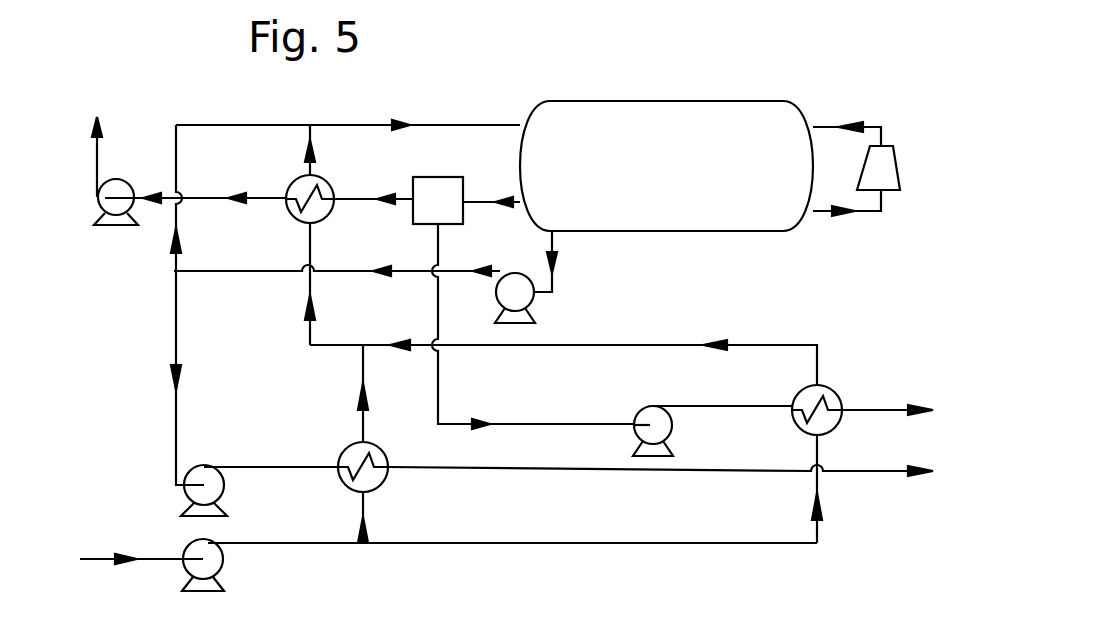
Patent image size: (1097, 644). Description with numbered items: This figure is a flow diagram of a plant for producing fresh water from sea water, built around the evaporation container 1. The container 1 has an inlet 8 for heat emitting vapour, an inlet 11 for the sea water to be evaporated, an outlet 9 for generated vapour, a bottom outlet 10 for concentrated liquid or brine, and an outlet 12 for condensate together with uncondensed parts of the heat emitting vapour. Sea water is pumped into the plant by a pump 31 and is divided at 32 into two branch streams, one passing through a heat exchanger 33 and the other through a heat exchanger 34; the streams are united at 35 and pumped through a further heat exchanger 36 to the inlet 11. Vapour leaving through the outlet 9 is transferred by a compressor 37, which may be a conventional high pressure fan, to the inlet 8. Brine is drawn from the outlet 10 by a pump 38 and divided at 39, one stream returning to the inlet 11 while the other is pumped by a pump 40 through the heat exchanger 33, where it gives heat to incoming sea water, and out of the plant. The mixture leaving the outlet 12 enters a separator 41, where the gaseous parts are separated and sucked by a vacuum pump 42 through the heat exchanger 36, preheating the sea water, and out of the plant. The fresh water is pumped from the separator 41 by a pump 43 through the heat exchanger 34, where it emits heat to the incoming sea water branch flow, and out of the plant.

The container 1 is at (620, 130).
The inlet for heat emitting vapour 8 is at (822, 125).
The outlet for generated vapour 9 is at (820, 212).
The outlet for concentrated liquid 10 is at (555, 238).
The inlet for liquid to be evaporated 11 is at (503, 127).
The outlet for condensate 12 is at (470, 203).
The pump 31 is at (218, 575).
The division point 32 is at (365, 545).
The heat exchanger 33 is at (350, 455).
The heat exchanger 34 is at (820, 385).
The union point 35 is at (365, 345).
The heat exchanger 36 is at (306, 181).
The compressor 37 is at (885, 170).
The pump 38 is at (518, 282).
The division point 39 is at (174, 271).
The pump 40 is at (205, 470).
The separator 41 is at (430, 190).
The vacuum pump 42 is at (117, 179).
The pump 43 is at (648, 420).